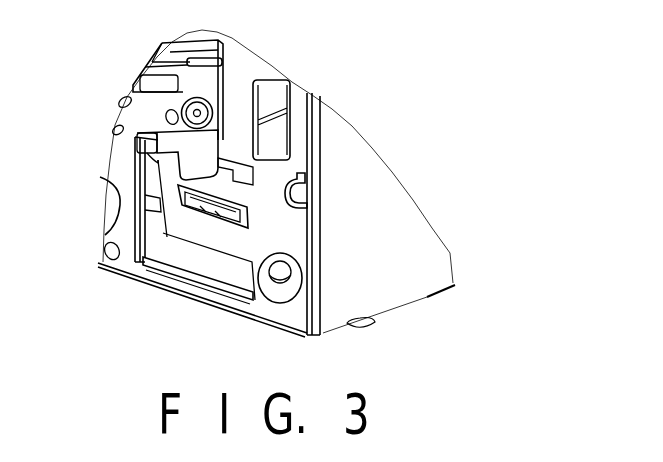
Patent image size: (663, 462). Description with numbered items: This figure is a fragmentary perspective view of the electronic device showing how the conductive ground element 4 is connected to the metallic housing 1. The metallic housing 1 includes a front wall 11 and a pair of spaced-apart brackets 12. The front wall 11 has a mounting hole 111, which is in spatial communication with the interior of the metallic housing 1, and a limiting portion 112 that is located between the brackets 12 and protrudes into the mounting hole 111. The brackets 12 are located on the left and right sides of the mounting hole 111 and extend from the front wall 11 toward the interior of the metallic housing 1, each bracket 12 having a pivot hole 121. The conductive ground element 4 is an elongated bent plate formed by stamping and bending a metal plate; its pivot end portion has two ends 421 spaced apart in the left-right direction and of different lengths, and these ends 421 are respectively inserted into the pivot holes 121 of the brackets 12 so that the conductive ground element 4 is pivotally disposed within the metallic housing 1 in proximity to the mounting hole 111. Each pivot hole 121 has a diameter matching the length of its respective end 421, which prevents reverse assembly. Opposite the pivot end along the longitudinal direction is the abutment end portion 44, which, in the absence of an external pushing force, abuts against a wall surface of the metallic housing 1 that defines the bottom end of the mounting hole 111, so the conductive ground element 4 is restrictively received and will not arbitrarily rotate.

The metallic housing 1 is at (368, 193).
The front wall 11 is at (230, 82).
The bracket 12 is at (150, 116).
The limiting portion 112 is at (198, 173).
The pivot hole 121 is at (135, 152).
The conductive ground element 4 is at (170, 218).
The end 421 is at (155, 157).
The mounting hole 111 is at (148, 203).
The abutment end portion 44 is at (200, 277).